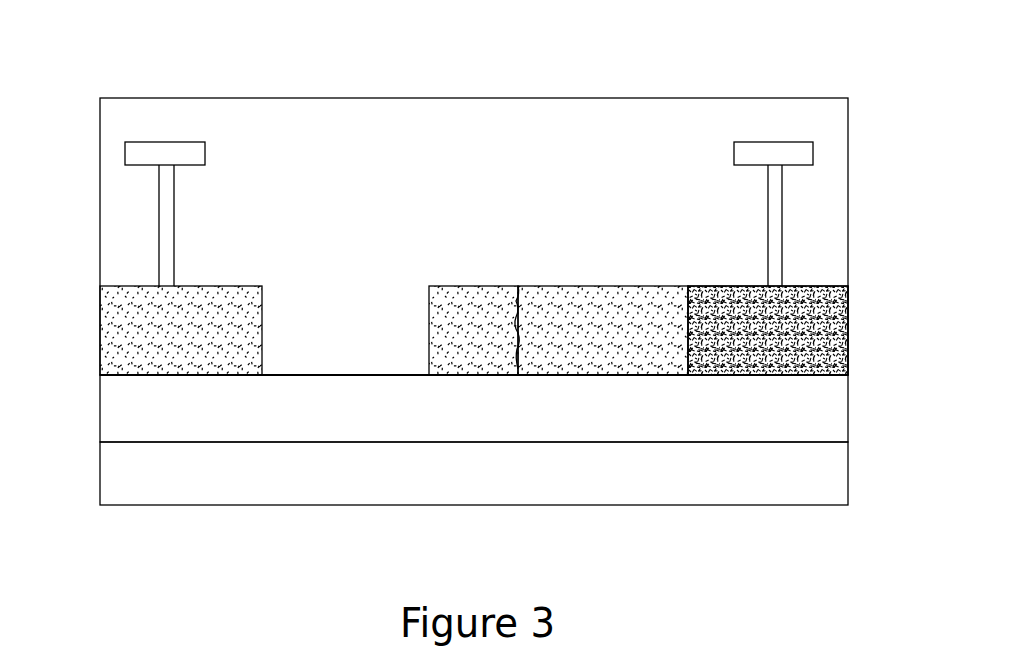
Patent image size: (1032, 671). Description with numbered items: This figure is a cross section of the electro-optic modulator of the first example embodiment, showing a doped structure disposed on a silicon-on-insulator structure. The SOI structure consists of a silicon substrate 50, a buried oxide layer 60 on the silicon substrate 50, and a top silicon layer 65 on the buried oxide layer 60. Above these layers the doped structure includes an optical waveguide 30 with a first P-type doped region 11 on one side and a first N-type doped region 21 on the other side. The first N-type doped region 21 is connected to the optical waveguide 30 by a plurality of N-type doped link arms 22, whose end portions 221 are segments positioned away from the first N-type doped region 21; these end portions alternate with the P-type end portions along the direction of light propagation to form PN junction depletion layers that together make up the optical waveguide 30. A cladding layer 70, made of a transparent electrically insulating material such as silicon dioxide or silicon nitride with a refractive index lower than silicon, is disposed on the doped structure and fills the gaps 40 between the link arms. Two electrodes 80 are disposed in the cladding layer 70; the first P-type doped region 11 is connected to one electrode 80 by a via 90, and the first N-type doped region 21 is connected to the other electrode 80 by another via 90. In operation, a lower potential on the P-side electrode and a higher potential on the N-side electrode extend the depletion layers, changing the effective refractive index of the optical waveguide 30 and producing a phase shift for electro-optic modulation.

The first P-type doped region 11 is at (248, 302).
The first N-type doped region 21 is at (712, 300).
The N-type doped link arms 22 is at (556, 298).
The end portions of the N-type doped link arms 221 is at (460, 310).
The optical waveguide 30 is at (558, 306).
The gaps 40 is at (312, 358).
The silicon substrate 50 is at (826, 485).
The buried oxide layer 60 is at (822, 422).
The top silicon layer 65 is at (815, 318).
The cladding layer 70 is at (630, 125).
The electrodes 80 is at (137, 157).
The via 90 is at (165, 228).